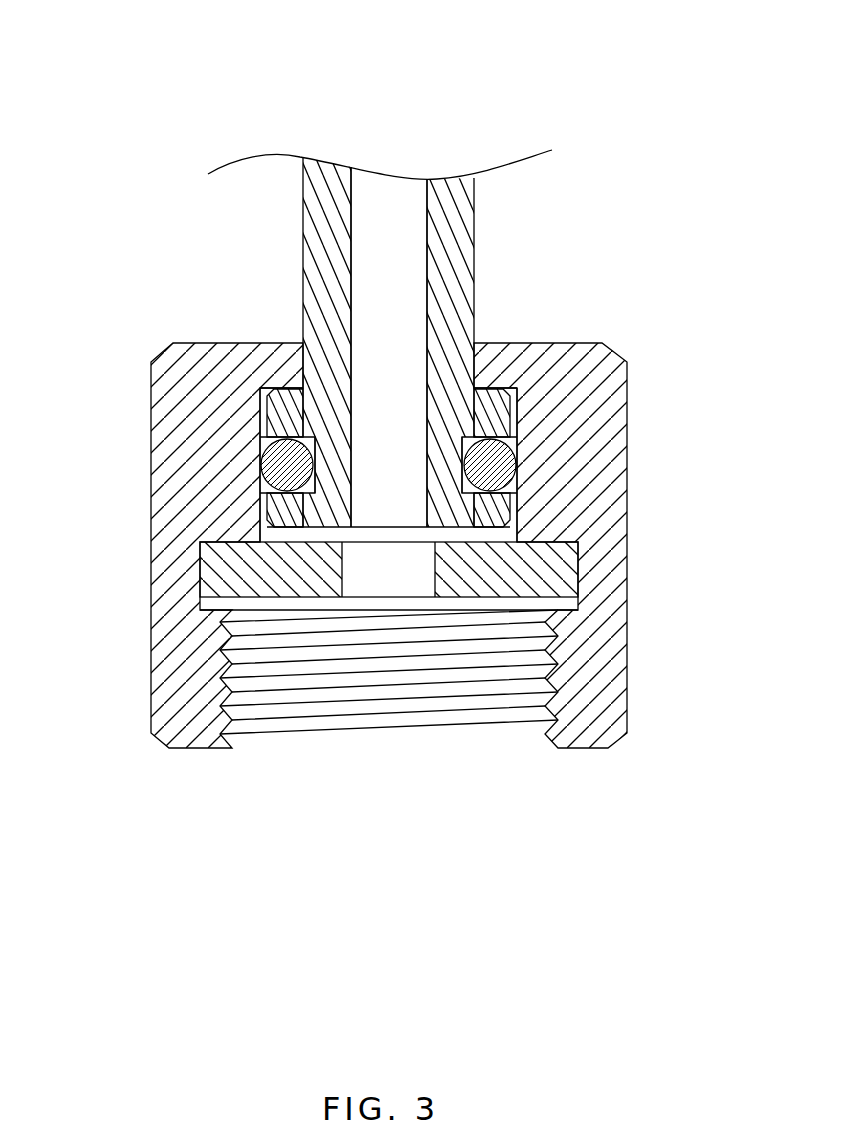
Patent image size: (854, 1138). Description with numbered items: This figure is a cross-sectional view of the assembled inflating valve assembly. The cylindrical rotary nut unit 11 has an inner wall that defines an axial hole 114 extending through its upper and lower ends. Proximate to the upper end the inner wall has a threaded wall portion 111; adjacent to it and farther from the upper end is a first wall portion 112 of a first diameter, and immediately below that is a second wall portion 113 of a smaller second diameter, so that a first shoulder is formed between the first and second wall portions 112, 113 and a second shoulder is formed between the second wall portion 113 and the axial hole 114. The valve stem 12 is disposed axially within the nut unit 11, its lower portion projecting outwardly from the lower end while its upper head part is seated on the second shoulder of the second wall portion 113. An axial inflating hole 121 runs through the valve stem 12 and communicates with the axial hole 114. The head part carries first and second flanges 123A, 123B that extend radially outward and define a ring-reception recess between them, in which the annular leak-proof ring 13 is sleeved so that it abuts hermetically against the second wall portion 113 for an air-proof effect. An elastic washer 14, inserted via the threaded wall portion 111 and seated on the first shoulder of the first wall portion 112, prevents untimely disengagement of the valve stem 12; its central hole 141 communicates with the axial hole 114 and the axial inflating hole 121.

The rotary nut unit 11 is at (607, 478).
The threaded wall portion 111 is at (493, 688).
The first wall portion 112 is at (223, 618).
The second wall portion 113 is at (268, 530).
The axial hole 114 is at (303, 365).
The valve stem 12 is at (453, 247).
The axial inflating hole 121 is at (385, 192).
The first flange 123A is at (493, 405).
The second flange 123B is at (500, 512).
The annular leak-proof ring 13 is at (520, 440).
The elastic washer 14 is at (555, 572).
The central hole 141 is at (375, 583).